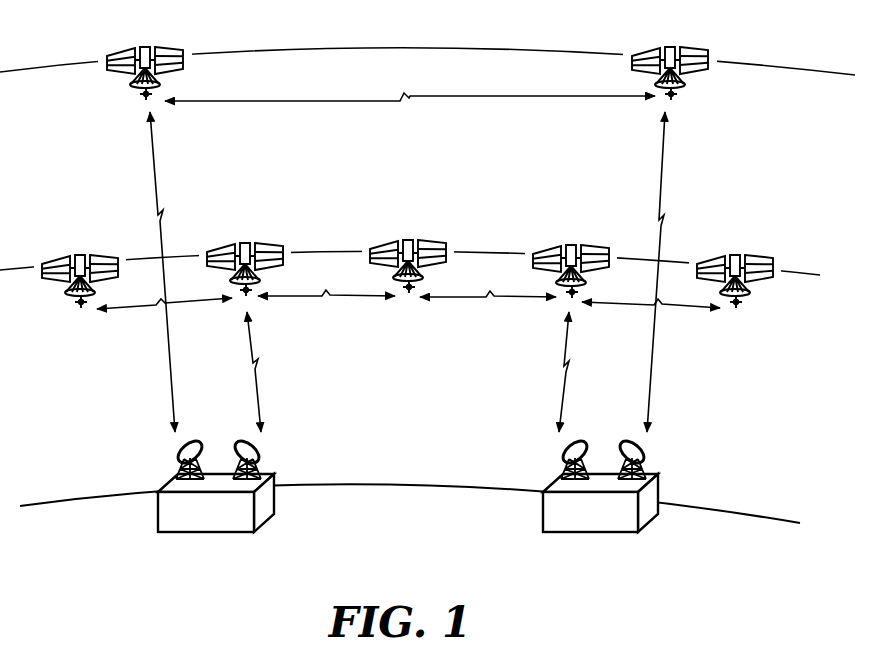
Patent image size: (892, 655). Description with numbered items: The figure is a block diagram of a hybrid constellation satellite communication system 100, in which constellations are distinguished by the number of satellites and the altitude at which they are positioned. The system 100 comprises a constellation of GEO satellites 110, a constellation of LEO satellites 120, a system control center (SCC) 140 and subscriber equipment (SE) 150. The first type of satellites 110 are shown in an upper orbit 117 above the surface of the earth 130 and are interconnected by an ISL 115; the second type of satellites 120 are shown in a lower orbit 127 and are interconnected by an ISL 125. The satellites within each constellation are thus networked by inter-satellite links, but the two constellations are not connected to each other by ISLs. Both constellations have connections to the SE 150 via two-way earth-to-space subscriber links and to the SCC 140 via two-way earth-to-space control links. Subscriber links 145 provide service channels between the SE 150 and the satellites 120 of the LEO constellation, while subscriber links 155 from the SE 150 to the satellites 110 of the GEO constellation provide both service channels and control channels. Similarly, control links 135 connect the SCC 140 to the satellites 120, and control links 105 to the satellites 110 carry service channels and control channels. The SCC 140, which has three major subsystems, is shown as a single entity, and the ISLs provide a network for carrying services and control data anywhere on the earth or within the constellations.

The hybrid constellation satellite communication system 100 is at (388, 576).
The control links 105 is at (168, 368).
The GEO satellites 110 is at (143, 42).
The ISL 115 is at (332, 104).
The orbit 117 is at (407, 46).
The LEO satellites 120 is at (77, 246).
The ISL 125 is at (197, 312).
The orbit 127 is at (804, 274).
The surface of the earth 130 is at (411, 484).
The control links 135 is at (256, 394).
The system control center (SCC) 140 is at (198, 533).
The subscriber links 145 is at (562, 395).
The subscriber equipment (SE) 150 is at (598, 533).
The subscriber links 155 is at (652, 368).